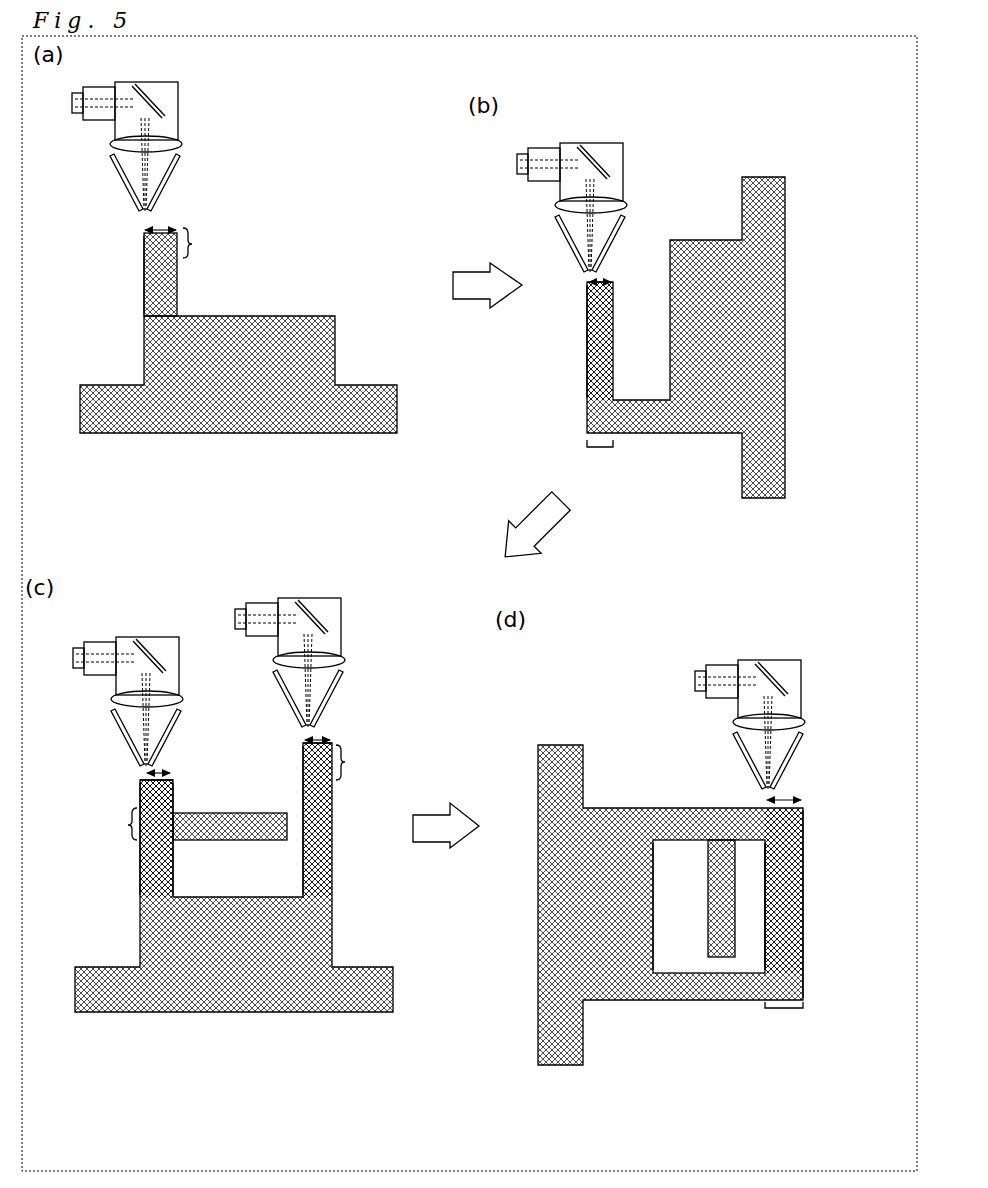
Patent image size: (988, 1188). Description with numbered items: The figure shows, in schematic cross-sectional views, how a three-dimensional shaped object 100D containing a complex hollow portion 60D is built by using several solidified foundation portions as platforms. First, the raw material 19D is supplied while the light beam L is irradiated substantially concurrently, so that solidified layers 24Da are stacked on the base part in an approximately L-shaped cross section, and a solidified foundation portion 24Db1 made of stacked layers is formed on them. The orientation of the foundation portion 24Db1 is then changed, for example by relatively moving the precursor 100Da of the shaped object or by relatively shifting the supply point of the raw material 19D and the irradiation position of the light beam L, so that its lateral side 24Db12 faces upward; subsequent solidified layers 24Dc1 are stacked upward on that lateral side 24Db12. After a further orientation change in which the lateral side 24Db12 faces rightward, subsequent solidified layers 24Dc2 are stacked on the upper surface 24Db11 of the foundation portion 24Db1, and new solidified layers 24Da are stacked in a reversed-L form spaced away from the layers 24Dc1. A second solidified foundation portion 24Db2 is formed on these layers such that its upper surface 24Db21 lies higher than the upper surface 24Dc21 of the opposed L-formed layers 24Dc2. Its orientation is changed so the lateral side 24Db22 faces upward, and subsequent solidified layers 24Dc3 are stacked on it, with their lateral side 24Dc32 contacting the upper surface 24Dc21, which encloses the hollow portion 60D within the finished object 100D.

The three-dimensional shaped object 100D is at (809, 638).
The precursor of the three-dimensional shaped object 100Da is at (328, 206).
The raw material 19D is at (138, 216).
The light beam L is at (143, 211).
The solidified layers 24Da is at (144, 318).
The solidified foundation portion 24Db1 is at (193, 244).
The upper surface of the solidified foundation portion 24Db11 is at (140, 862).
The lateral side of the solidified foundation portion 24Db12 is at (228, 1065).
The solidified foundation portion 24Db2 is at (566, 893).
The upper surface of the solidified foundation portion 24Db21 is at (322, 746).
The lateral side of the solidified foundation portion 24Db22 is at (306, 770).
The subsequent solidified layers 24Dc1 is at (702, 1053).
The subsequent solidified layers 24Dc2 is at (830, 778).
The upper surface of the subsequent solidified layers 24Dc21 is at (175, 778).
The subsequent solidified layers 24Dc3 is at (787, 895).
The lateral side of the subsequent solidified layers 24Dc32 is at (787, 856).
The hollow portion 60D is at (750, 943).